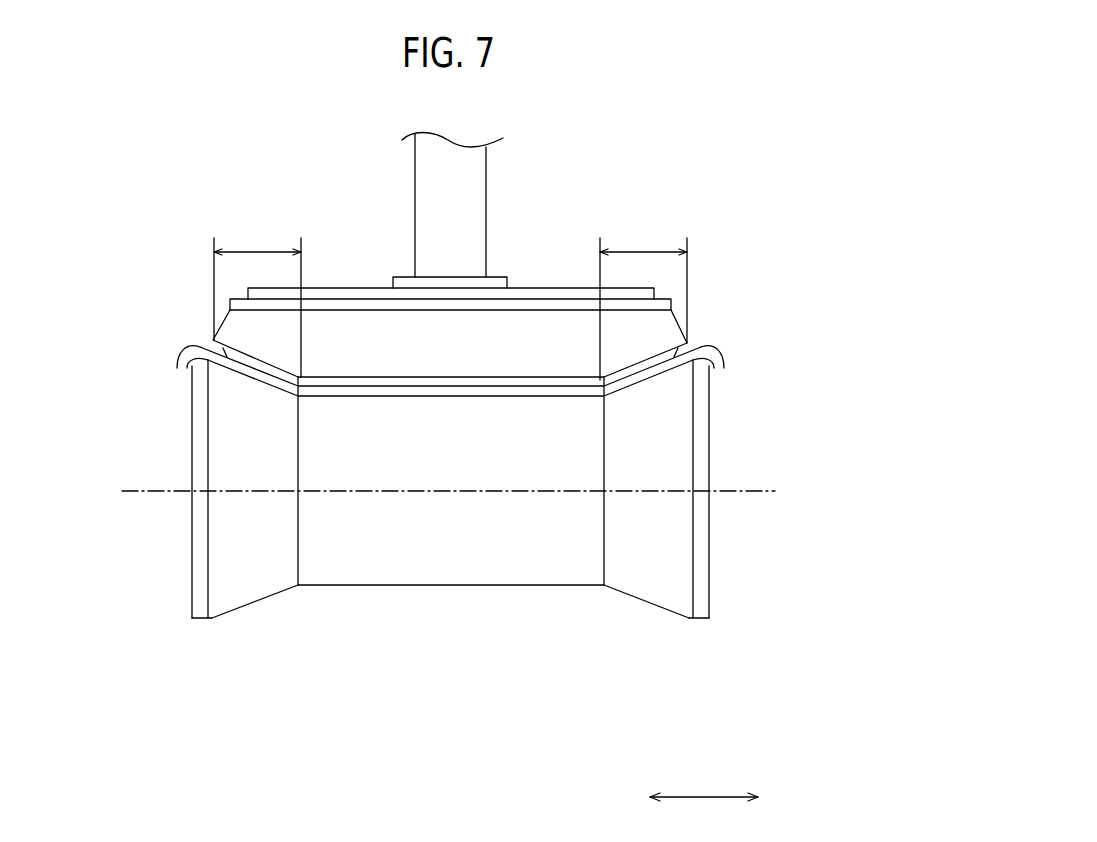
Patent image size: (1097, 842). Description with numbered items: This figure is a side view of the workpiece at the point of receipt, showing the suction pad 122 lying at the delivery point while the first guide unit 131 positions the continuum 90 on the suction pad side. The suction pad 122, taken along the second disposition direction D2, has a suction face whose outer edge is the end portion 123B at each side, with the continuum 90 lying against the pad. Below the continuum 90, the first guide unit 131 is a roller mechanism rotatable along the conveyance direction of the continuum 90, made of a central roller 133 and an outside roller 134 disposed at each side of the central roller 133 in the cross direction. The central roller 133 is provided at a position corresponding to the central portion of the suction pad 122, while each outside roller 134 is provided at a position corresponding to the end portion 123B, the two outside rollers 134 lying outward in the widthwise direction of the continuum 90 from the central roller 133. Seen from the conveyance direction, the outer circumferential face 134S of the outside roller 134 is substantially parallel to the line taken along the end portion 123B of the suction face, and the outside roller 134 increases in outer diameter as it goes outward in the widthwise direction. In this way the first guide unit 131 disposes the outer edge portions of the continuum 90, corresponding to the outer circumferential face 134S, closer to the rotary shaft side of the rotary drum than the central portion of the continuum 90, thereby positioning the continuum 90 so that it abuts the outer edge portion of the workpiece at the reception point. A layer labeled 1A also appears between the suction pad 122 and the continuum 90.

The suction pad 122 is at (537, 340).
The end portion of the suction pad 123B is at (450, 293).
The adhesive layer 1A is at (696, 346).
The continuum 90 is at (730, 352).
The first guide unit 131 is at (448, 556).
The central roller 133 is at (451, 519).
The outside roller 134 is at (250, 596).
The outer circumferential face of the outside roller 134S is at (224, 619).
The second disposition direction D2 is at (700, 781).